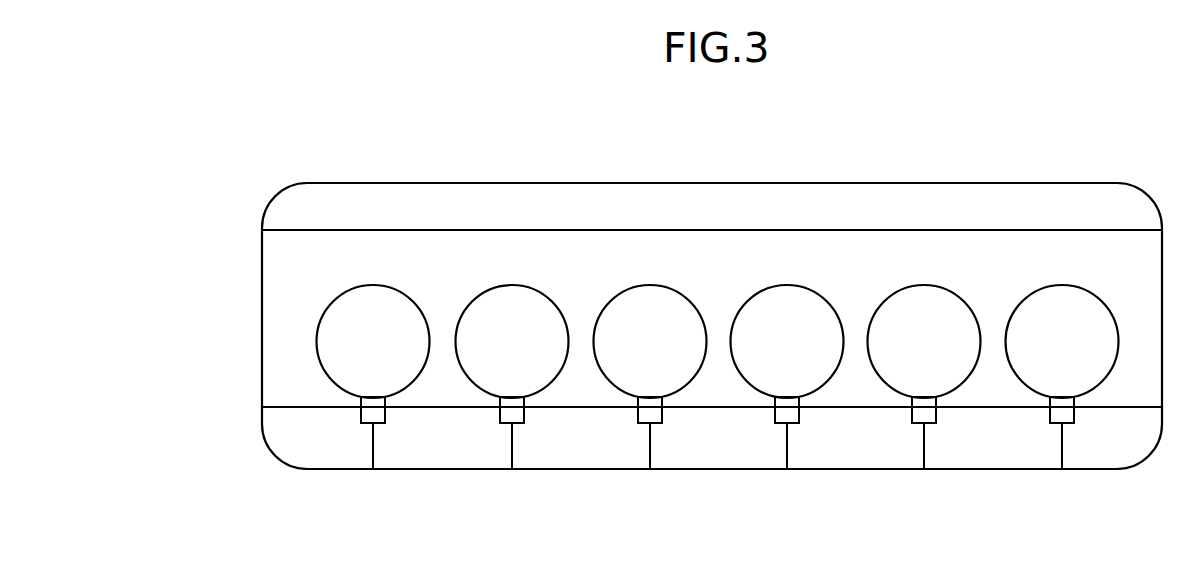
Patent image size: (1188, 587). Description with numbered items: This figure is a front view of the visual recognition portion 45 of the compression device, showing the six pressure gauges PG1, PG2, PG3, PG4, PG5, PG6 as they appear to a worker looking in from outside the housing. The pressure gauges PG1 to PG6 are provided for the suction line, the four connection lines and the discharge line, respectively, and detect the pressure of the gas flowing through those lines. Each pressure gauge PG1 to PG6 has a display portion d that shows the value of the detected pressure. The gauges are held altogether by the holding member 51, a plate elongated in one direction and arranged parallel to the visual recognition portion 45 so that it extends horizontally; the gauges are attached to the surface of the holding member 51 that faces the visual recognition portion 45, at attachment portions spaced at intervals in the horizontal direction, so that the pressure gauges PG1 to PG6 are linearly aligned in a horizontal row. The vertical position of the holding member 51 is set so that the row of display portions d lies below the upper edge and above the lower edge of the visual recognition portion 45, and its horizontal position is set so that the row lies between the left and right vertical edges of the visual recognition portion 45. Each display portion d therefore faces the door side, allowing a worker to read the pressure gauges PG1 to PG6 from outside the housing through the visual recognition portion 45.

The visual recognition portion 45 is at (280, 191).
The holding member 51 is at (293, 272).
The pressure gauge PG1 is at (367, 285).
The pressure gauge PG2 is at (506, 285).
The pressure gauge PG3 is at (644, 285).
The pressure gauge PG4 is at (783, 285).
The pressure gauge PG5 is at (919, 285).
The pressure gauge PG6 is at (1059, 285).
The display portion d is at (493, 375).